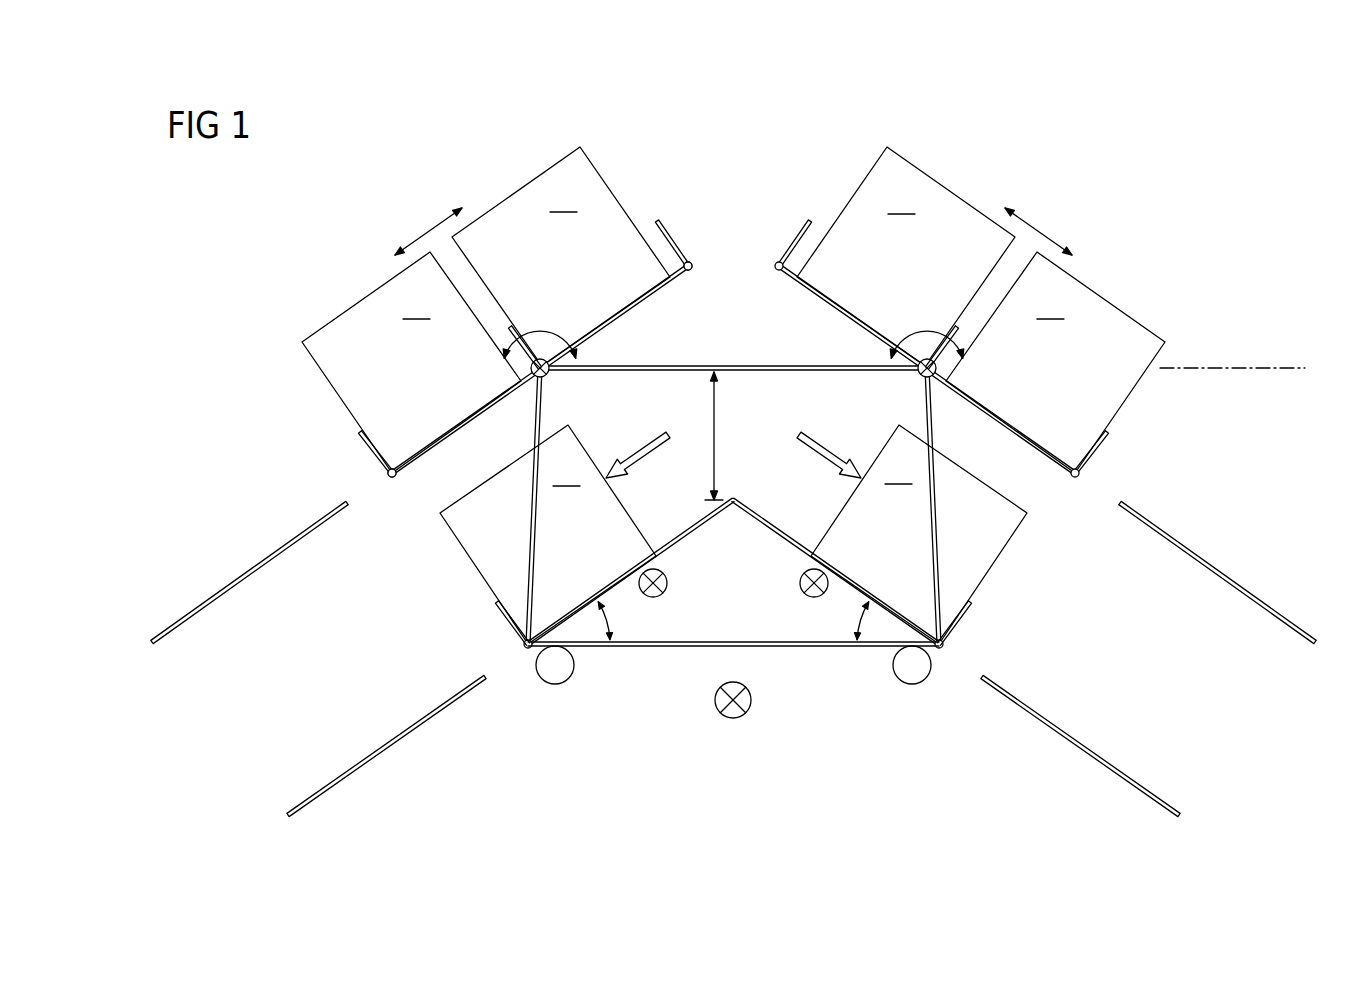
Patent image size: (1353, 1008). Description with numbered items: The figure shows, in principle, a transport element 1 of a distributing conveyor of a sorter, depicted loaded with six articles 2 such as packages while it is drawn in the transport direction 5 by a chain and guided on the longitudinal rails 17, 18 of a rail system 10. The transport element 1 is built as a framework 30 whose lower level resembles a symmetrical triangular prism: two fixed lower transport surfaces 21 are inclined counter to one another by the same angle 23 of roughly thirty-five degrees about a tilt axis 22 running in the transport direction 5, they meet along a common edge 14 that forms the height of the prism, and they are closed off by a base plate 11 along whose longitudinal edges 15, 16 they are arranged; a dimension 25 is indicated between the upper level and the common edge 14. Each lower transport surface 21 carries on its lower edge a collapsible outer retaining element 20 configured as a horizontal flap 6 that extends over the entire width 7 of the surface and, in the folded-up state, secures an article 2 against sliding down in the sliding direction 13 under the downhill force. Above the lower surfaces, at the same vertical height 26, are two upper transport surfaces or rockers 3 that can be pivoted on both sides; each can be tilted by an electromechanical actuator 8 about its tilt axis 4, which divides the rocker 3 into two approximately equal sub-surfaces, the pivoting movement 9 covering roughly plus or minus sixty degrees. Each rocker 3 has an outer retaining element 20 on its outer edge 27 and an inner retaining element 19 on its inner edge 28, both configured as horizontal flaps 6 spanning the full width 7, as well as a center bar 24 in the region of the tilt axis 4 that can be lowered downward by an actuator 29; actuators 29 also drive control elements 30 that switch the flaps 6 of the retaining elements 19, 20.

The transport element 1 is at (265, 253).
The article 2 is at (355, 305).
The upper transport surface (rocker) 3 is at (602, 325).
The tilt axis 4 is at (555, 378).
The transport direction 5 is at (733, 719).
The flap 6 is at (735, 409).
The width 7 is at (733, 454).
The electromechanical actuator 8 is at (733, 557).
The rotation of upper pivot joint 9 is at (538, 330).
The rail system 10 is at (733, 696).
The base plate 11 is at (733, 640).
The sliding direction 13 is at (423, 230).
The common edge 14 is at (733, 497).
The edge of base plate 15 is at (525, 650).
The edge of base plate 16 is at (942, 650).
The longitudinal rail 17 is at (556, 682).
The longitudinal rail 18 is at (911, 682).
The inner retaining element 19 is at (672, 230).
The outer retaining element 20 is at (358, 434).
The lower transport surface 21 is at (682, 540).
The tilt axis 22 is at (655, 598).
The angle 23 is at (601, 647).
The center bar 24 is at (500, 331).
The height 25 is at (718, 432).
The vertical height 26 is at (1265, 368).
The outer edge 27 is at (392, 478).
The inner edge 28 is at (692, 264).
The actuator 29 is at (775, 264).
The framework 30 is at (728, 366).